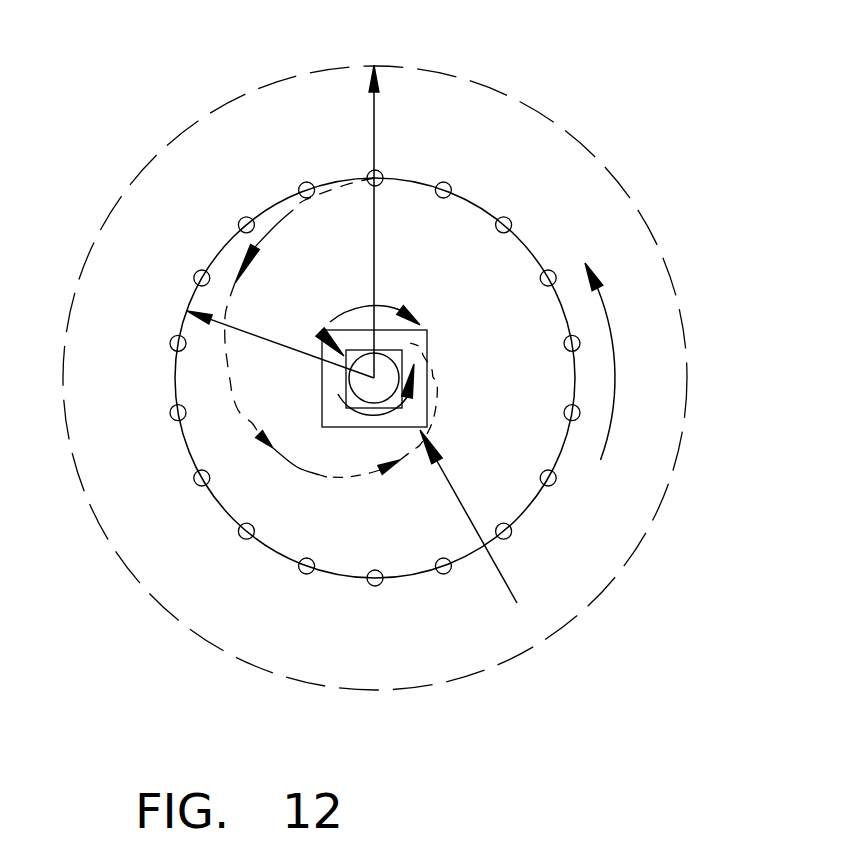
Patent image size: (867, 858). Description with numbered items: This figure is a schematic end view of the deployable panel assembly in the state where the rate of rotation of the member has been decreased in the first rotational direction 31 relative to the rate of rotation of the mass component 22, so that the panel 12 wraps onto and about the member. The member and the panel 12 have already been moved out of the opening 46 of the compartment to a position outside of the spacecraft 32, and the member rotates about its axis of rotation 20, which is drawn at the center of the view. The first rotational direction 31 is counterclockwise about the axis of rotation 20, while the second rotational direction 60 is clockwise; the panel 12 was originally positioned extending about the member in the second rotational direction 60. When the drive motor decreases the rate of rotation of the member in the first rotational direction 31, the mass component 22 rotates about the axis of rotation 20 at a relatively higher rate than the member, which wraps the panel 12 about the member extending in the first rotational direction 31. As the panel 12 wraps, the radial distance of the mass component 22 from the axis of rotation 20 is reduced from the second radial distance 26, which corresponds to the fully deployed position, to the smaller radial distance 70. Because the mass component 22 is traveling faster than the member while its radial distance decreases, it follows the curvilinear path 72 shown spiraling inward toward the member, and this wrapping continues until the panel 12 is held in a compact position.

The panel 12 is at (477, 495).
The axis of rotation 20 is at (372, 378).
The mass component 22 is at (198, 275).
The second radial distance 26 is at (375, 125).
The first rotational direction 31 is at (615, 403).
The spacecraft 32 is at (488, 526).
The opening 46 is at (320, 332).
The second rotational direction 60 is at (378, 307).
The radial distance 70 is at (257, 337).
The curvilinear path 72 is at (255, 247).